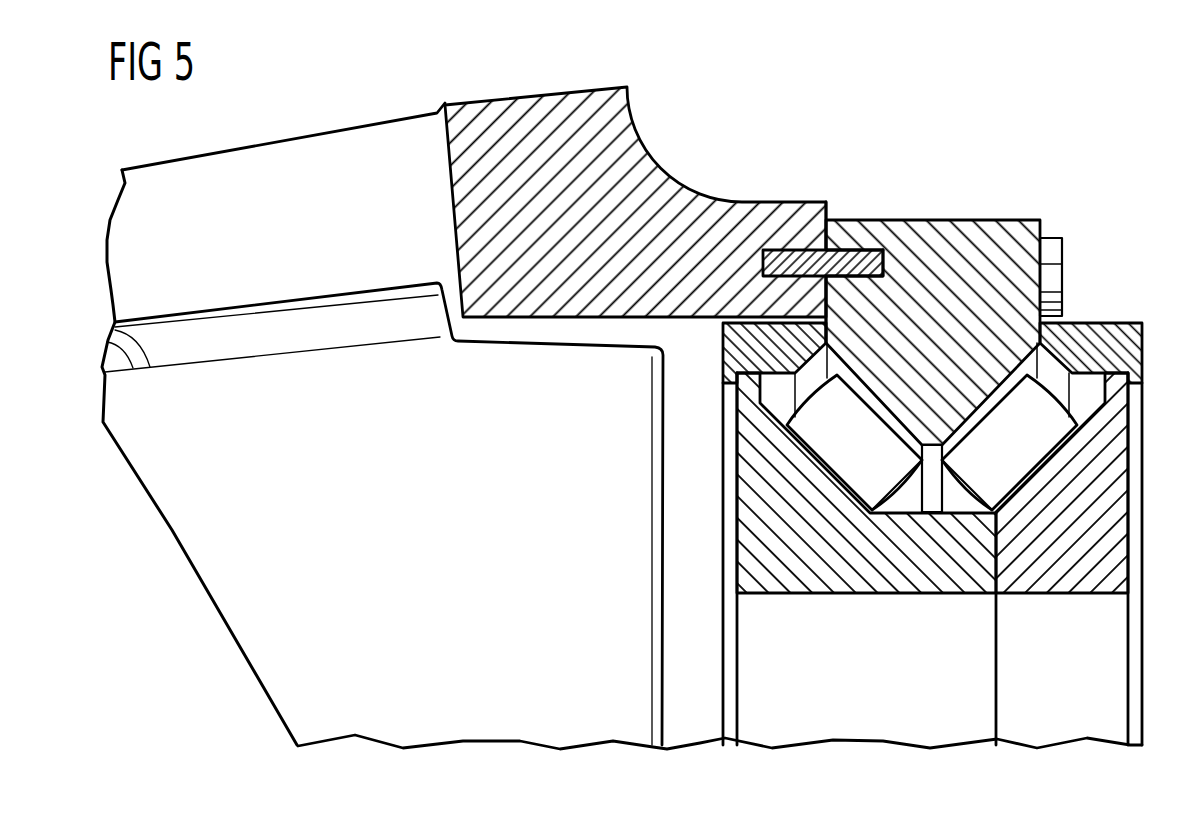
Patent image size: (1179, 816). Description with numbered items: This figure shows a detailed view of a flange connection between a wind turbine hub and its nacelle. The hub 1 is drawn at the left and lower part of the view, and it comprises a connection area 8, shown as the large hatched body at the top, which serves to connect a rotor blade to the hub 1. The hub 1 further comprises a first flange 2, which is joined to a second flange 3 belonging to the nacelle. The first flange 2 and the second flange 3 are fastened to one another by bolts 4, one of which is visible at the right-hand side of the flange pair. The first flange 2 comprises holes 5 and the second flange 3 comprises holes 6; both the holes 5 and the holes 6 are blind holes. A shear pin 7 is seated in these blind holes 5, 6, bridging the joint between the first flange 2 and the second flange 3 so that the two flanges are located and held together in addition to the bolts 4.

The hub 1 is at (173, 527).
The first flange 2 is at (810, 203).
The second flange 3 is at (828, 235).
The bolts 4 is at (1052, 277).
The holes 5 is at (777, 247).
The holes 6 is at (870, 248).
The shear pin 7 is at (857, 267).
The connection area 8 is at (538, 93).